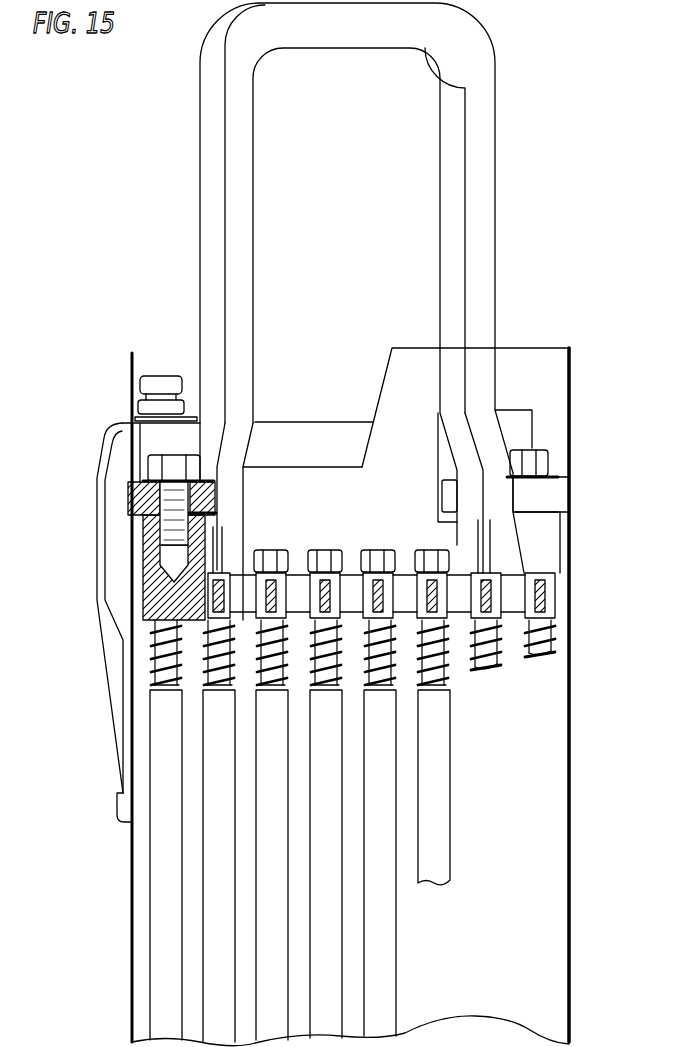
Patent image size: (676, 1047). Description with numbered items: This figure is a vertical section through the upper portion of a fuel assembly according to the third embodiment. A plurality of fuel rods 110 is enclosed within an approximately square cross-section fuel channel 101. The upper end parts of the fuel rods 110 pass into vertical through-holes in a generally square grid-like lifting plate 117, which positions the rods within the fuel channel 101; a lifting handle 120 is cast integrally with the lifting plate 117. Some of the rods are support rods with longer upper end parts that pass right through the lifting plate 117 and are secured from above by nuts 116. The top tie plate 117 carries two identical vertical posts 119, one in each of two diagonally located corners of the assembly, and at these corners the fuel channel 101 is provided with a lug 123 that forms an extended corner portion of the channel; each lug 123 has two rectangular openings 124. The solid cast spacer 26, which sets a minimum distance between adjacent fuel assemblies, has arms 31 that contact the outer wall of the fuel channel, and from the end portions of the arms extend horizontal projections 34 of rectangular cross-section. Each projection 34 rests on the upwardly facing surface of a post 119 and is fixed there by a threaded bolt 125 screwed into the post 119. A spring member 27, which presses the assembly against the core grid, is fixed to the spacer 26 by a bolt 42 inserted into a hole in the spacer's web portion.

The lifting handle 120 is at (496, 168).
The lug 123 is at (540, 365).
The bolt 42 is at (162, 383).
The rectangular opening 124 is at (128, 424).
The horizontal projection 34 is at (140, 480).
The arm 31 is at (303, 435).
The nut 116 is at (375, 548).
The threaded bolt 125 is at (175, 527).
The spacer 26 is at (122, 573).
The spring member 27 is at (118, 630).
The post 119 is at (150, 608).
The lifting plate 117 is at (515, 590).
The fuel rod 110 is at (220, 873).
The fuel channel 101 is at (133, 948).